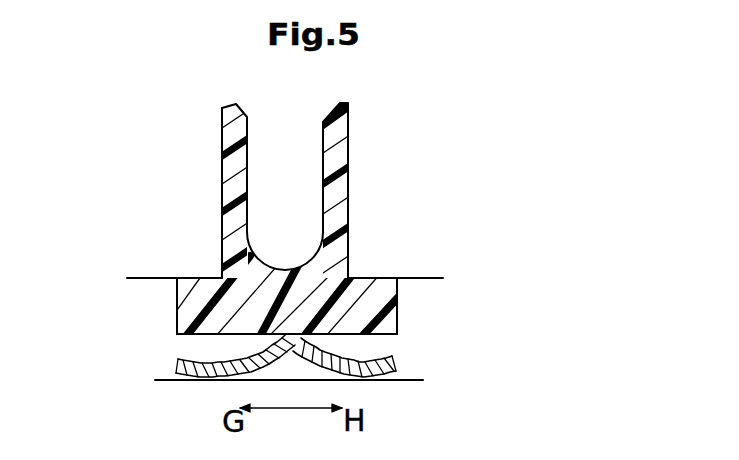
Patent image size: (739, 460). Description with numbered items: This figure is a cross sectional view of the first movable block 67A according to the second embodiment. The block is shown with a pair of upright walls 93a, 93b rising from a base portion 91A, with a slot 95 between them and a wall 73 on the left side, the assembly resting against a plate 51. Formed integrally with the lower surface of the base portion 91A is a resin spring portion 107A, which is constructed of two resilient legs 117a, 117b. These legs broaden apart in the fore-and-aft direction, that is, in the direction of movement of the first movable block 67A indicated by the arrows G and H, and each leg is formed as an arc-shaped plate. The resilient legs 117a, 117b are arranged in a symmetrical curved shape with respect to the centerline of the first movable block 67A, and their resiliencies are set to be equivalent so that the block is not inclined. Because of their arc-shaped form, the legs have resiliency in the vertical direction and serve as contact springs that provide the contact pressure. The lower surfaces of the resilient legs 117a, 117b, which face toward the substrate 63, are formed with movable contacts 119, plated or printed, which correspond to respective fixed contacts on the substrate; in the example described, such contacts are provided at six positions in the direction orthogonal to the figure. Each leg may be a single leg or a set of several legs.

The mounting plate 51 is at (160, 280).
The substrate 63 is at (165, 380).
The first movable block 67A is at (400, 212).
The terminal wall 73 is at (222, 176).
The base portion 91A is at (343, 320).
The first arm 93a is at (222, 110).
The second arm 93b is at (340, 104).
The slot 95 is at (249, 141).
The resin spring portion 107A is at (333, 353).
The resilient leg 117a is at (262, 358).
The resilient leg 117b is at (343, 320).
The movable contacts 119 is at (207, 383).